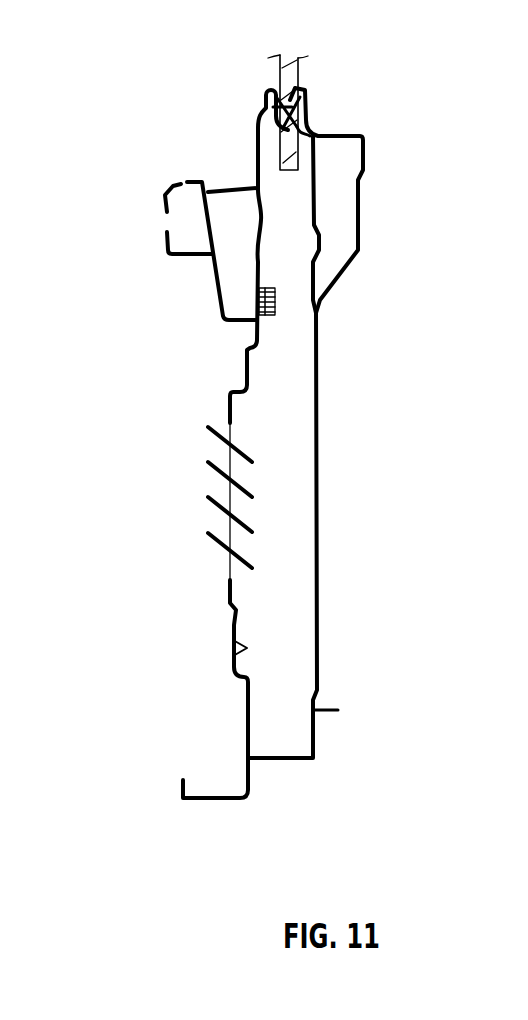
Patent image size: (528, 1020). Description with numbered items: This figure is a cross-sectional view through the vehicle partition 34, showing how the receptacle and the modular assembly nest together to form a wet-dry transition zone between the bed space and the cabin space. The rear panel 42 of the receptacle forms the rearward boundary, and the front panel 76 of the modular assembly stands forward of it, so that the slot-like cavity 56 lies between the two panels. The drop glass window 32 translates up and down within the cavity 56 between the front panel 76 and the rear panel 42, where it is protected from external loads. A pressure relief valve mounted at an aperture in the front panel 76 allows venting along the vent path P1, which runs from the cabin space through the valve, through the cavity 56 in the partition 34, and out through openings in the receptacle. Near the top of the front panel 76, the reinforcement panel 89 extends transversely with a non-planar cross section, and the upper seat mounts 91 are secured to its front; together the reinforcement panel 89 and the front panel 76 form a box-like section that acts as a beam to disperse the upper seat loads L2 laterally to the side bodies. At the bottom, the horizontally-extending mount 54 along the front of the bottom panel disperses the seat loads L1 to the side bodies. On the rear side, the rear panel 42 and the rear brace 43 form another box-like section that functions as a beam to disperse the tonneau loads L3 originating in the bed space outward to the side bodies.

The drop glass window 32 is at (277, 63).
The vehicle partition 34 is at (334, 116).
The rear brace 43 is at (313, 212).
The rear panel 42 is at (320, 578).
The slot-like cavity 56 is at (286, 469).
The front panel 76 is at (243, 365).
The reinforcement panel 89 is at (217, 287).
The upper seat mounts 91 is at (167, 242).
The horizontally-extending mount 54 is at (245, 702).
The seat loads L1 is at (233, 665).
The upper seat loads L2 is at (167, 207).
The tonneau loads L3 is at (423, 197).
The vent path P1 is at (272, 528).